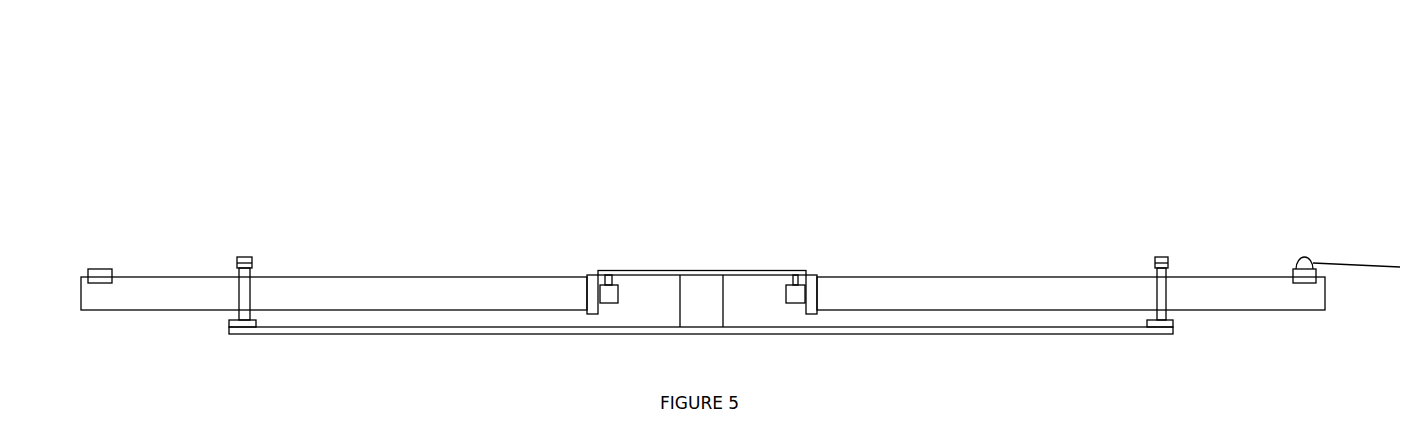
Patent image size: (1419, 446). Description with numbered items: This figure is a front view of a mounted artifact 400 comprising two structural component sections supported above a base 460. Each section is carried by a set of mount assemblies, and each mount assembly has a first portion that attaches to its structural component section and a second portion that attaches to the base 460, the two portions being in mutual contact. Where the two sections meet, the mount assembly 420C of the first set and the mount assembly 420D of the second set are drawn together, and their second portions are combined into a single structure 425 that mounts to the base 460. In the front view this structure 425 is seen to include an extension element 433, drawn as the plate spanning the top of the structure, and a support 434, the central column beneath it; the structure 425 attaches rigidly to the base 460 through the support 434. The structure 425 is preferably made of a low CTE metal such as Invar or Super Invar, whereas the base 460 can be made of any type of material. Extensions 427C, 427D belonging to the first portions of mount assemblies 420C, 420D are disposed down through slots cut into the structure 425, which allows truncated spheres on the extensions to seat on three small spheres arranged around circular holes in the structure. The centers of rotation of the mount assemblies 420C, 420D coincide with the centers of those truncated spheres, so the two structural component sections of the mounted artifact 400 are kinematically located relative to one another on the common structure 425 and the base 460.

The mounted artifact 400 is at (628, 93).
The mount assembly 420C is at (587, 227).
The mount assembly 420D is at (823, 225).
The structure 425 is at (702, 264).
The extension element 433 is at (722, 271).
The support 434 is at (723, 320).
The extension 427C is at (612, 278).
The extension 427D is at (790, 278).
The base 460 is at (841, 335).